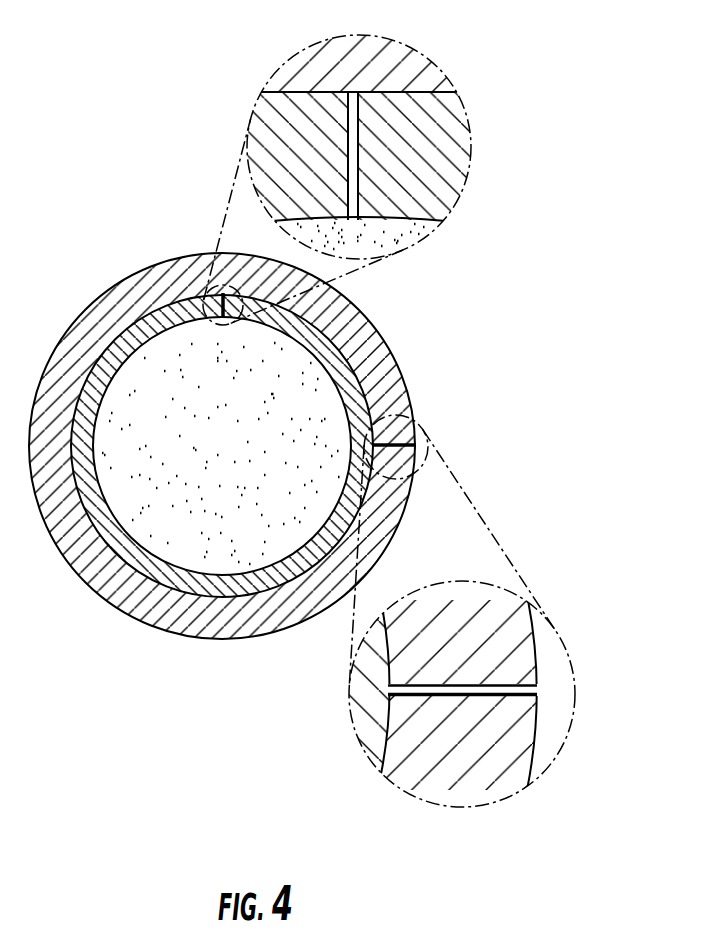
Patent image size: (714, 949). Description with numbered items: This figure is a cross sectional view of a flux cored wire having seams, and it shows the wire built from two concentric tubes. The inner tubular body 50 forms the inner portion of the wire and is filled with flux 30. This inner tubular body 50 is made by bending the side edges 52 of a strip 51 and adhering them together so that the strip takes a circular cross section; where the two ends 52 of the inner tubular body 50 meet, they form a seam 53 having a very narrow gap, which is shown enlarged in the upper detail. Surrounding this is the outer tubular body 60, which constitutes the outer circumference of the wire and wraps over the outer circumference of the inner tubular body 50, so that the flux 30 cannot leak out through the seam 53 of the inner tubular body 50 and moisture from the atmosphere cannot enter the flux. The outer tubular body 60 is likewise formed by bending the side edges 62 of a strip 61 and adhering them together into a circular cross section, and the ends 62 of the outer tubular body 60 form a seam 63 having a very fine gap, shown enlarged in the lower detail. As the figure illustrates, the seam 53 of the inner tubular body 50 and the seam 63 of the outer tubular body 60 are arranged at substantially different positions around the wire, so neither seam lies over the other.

The flux 30 is at (177, 542).
The inner tubular body 50 is at (274, 396).
The strip 51 is at (150, 323).
The side edges 52 is at (243, 313).
The seam 53 is at (360, 162).
The outer tubular body 60 is at (328, 410).
The strip 61 is at (378, 361).
The side edges 62 is at (500, 575).
The seam 63 is at (473, 687).